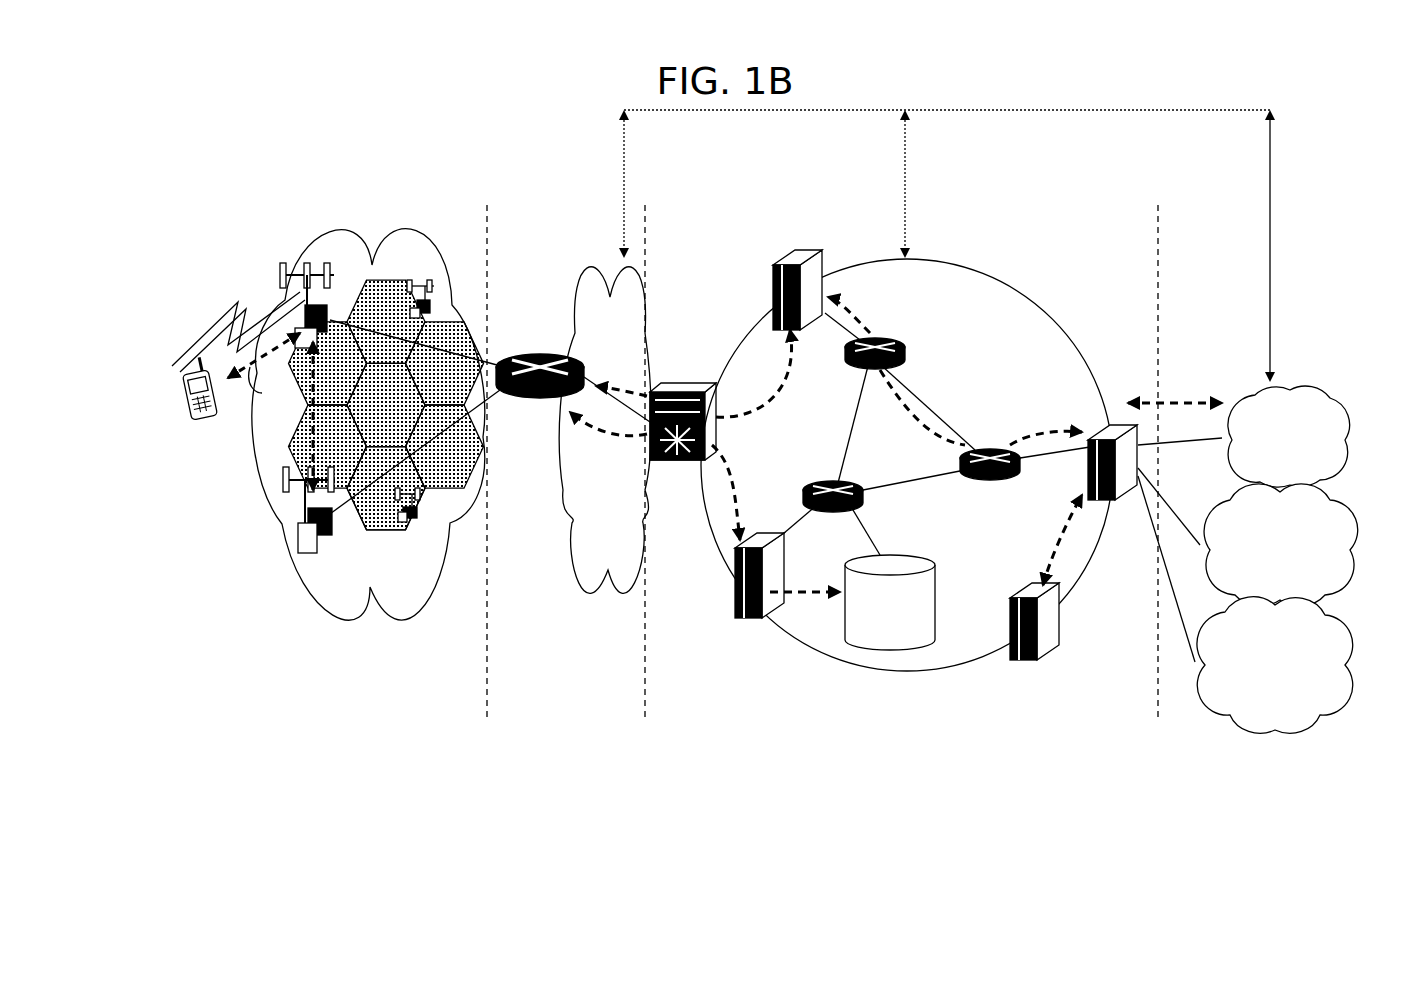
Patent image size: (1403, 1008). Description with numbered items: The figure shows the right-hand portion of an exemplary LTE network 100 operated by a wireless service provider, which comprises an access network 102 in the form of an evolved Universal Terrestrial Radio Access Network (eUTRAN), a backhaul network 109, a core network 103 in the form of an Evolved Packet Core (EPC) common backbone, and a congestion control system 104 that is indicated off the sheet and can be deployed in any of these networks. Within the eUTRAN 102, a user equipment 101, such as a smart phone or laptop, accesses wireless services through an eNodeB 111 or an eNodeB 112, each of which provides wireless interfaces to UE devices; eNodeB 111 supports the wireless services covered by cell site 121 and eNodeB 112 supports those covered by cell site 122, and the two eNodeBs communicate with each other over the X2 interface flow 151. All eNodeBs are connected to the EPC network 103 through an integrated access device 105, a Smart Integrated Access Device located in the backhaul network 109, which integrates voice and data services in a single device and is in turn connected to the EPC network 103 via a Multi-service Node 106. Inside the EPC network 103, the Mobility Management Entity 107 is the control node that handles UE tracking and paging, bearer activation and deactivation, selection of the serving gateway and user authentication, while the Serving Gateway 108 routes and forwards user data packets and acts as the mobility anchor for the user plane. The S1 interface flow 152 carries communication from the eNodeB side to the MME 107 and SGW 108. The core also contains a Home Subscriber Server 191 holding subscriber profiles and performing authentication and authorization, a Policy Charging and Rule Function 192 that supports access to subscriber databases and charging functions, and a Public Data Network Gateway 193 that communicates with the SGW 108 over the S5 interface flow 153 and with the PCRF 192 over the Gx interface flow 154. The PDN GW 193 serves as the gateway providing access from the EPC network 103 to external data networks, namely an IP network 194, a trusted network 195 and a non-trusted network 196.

The LTE network 100 is at (308, 90).
The user equipment 101 is at (192, 420).
The access network 102 is at (395, 622).
The core network 103 is at (805, 645).
The congestion control system 104 is at (985, 106).
The integrated access device 105 is at (530, 398).
The Multi-service Node 106 is at (681, 462).
The Mobility Management Entity 107 is at (733, 590).
The Serving Gateway 108 is at (787, 257).
The backhaul network 109 is at (614, 608).
The eNodeB 111 is at (303, 290).
The eNodeB 112 is at (302, 523).
The cell site 121 is at (340, 333).
The cell site 122 is at (358, 505).
The X2 interface flow 151 is at (307, 402).
The S1 interface flow 152 is at (790, 382).
The S5 interface flow 153 is at (867, 318).
The Gx interface flow 154 is at (1058, 536).
The Home Subscriber Server 191 is at (873, 630).
The Policy Charging and Rule Function 192 is at (1023, 653).
The Public Data Network Gateway 193 is at (1128, 505).
The IP network 194 is at (1274, 463).
The trusted network 195 is at (1264, 588).
The non-trusted network 196 is at (1259, 717).